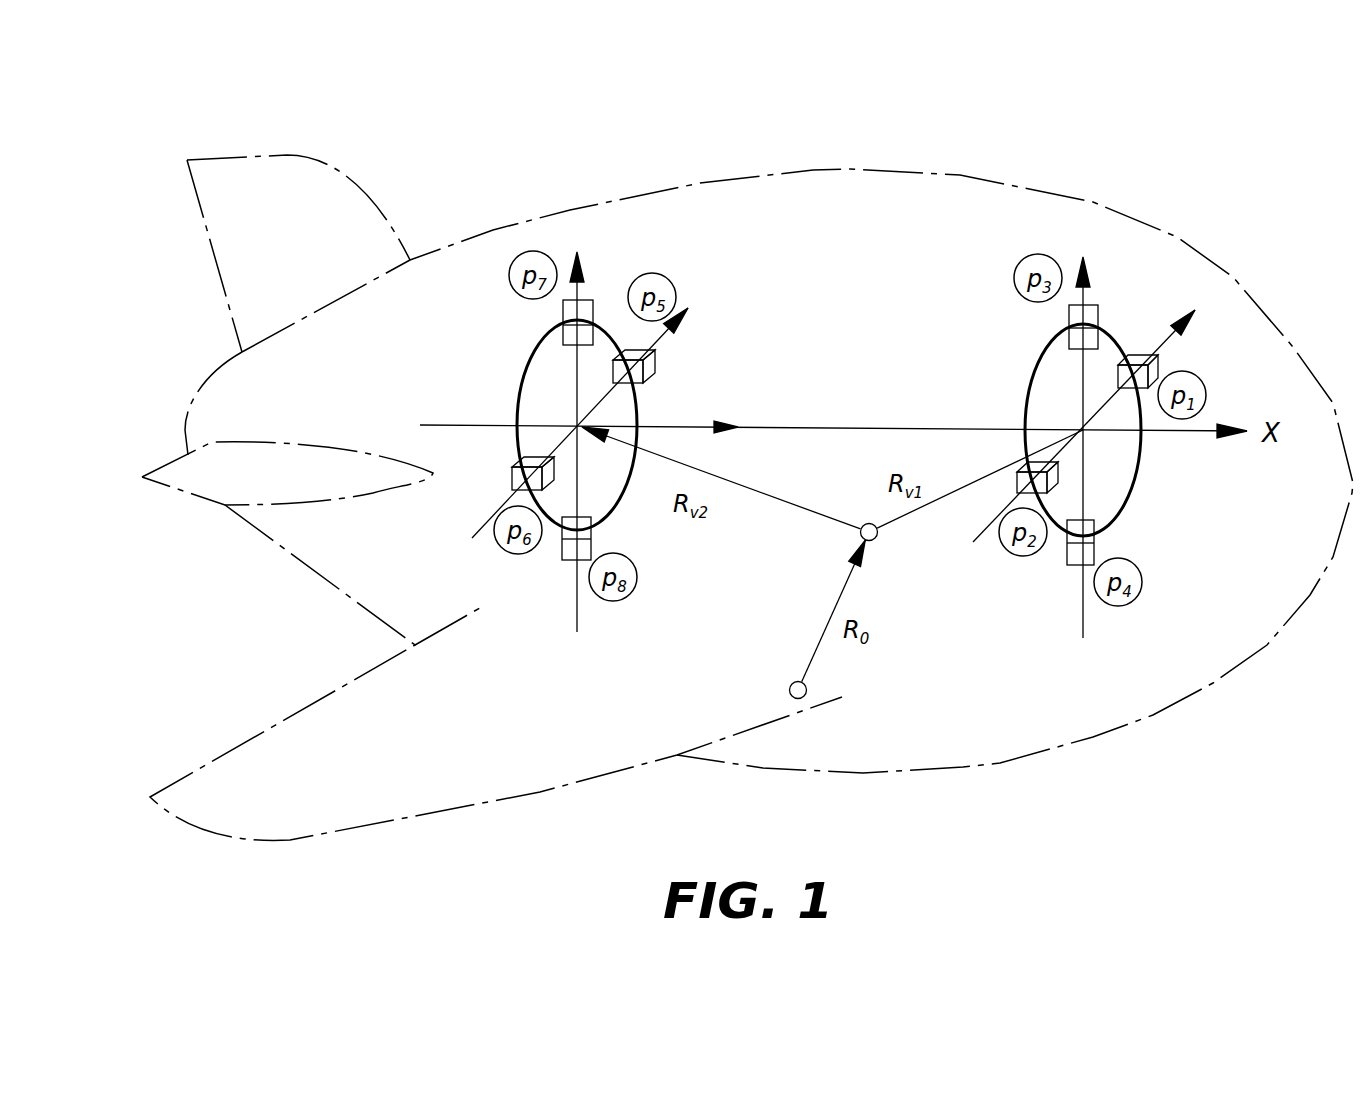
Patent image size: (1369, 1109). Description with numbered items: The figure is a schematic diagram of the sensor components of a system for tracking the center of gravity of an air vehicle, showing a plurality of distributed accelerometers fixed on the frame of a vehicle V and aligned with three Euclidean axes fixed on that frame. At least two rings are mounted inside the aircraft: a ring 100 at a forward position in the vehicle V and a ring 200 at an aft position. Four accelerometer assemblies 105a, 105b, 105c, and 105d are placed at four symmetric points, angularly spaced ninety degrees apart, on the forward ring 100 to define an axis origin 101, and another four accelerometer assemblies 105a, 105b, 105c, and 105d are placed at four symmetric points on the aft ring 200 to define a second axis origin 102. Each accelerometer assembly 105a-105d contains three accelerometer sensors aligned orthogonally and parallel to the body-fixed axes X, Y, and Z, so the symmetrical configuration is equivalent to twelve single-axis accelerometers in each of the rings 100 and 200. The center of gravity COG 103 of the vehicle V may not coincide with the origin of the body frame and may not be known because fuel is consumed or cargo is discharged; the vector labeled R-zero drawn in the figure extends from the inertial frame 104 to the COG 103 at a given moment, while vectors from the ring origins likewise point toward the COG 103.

The vehicle V is at (1180, 237).
The ring 100 is at (1033, 365).
The axis origin 101 is at (1083, 430).
The second axis origin 102 is at (577, 425).
The center of gravity COG 103 is at (858, 541).
The inertial frame 104 is at (790, 687).
The accelerometer assembly 105a is at (593, 310).
The accelerometer assembly 105b is at (562, 560).
The accelerometer assembly 105c is at (657, 365).
The accelerometer assembly 105d is at (512, 480).
The ring 200 is at (528, 365).